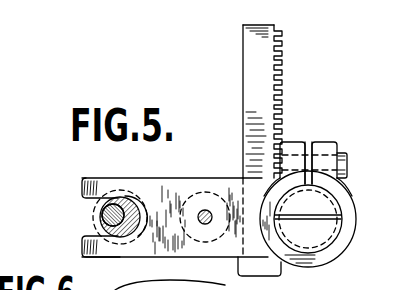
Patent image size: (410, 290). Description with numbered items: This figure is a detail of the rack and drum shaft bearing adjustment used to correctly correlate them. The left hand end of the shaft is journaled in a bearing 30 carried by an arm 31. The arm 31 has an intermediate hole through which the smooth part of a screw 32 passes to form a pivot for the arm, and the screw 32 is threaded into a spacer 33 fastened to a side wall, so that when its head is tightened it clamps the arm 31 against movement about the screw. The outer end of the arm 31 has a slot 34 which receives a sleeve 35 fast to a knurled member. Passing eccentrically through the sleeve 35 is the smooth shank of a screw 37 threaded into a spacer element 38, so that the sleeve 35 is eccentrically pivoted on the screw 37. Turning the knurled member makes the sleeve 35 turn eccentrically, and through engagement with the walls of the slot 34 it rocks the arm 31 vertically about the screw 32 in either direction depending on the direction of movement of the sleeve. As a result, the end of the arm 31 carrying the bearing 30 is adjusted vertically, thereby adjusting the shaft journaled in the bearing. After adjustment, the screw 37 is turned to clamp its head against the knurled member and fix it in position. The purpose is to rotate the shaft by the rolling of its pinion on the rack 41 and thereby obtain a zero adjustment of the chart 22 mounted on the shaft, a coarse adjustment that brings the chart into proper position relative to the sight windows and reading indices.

The chart 22 is at (352, 289).
The bearing 30 is at (320, 226).
The arm 31 is at (178, 251).
The screw 32 is at (205, 212).
The spacer 33 is at (190, 199).
The slot 34 is at (87, 201).
The sleeve 35 is at (98, 223).
The screw 37 is at (118, 206).
The spacer element 38 is at (100, 218).
The rack 41 is at (274, 97).